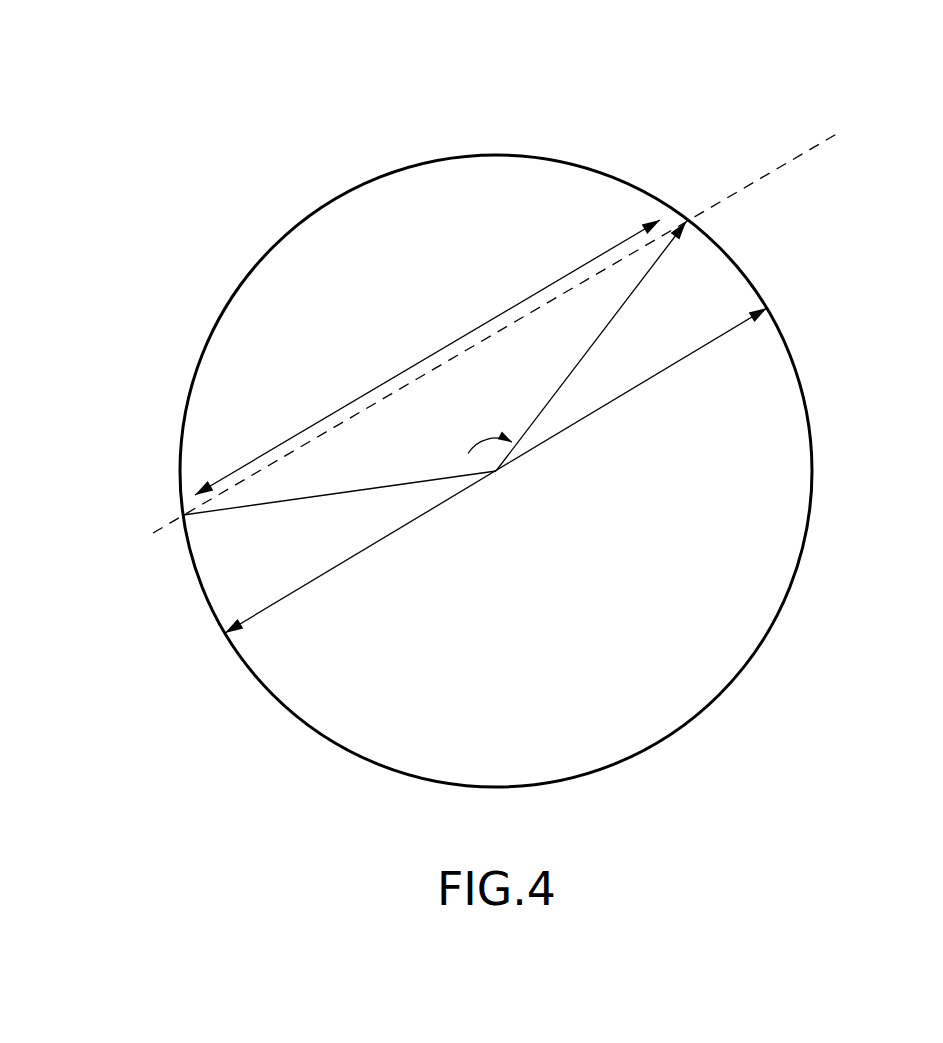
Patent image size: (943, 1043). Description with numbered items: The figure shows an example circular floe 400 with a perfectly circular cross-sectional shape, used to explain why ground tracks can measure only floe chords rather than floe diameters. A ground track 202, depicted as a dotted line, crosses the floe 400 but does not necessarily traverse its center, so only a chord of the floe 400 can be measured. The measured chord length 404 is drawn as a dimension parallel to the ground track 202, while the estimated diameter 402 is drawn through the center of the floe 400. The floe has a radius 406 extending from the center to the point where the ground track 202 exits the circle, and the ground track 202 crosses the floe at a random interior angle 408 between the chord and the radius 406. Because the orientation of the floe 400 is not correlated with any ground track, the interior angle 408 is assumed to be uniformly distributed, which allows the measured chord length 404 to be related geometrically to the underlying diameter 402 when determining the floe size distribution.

The circular floe 400 is at (246, 104).
The estimated diameter 402 is at (278, 601).
The measured chord length 404 is at (280, 446).
The radius 406 is at (632, 291).
The interior angle 408 is at (455, 461).
The ground track 202 is at (156, 530).